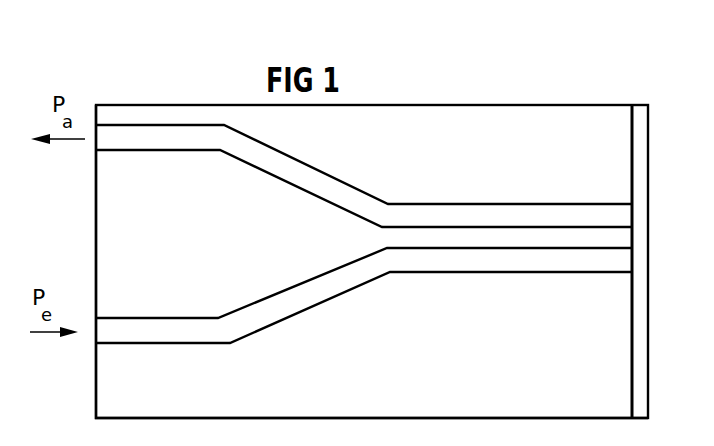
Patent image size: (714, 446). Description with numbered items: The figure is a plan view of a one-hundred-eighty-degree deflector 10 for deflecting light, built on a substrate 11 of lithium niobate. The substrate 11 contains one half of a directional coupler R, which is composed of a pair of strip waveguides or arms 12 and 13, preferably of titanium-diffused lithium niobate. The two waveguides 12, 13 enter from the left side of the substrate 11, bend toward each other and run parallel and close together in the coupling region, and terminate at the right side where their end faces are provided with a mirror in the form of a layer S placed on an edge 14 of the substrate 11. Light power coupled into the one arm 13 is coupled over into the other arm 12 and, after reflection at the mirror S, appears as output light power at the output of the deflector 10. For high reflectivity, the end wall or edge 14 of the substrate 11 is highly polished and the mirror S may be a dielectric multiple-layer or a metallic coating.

The 180° deflector 10 is at (431, 101).
The substrate 11 is at (527, 398).
The strip waveguide 12 is at (284, 168).
The strip waveguide 13 is at (288, 308).
The edge 14 is at (633, 353).
The directional coupler R is at (513, 184).
The mirror layer S is at (647, 108).